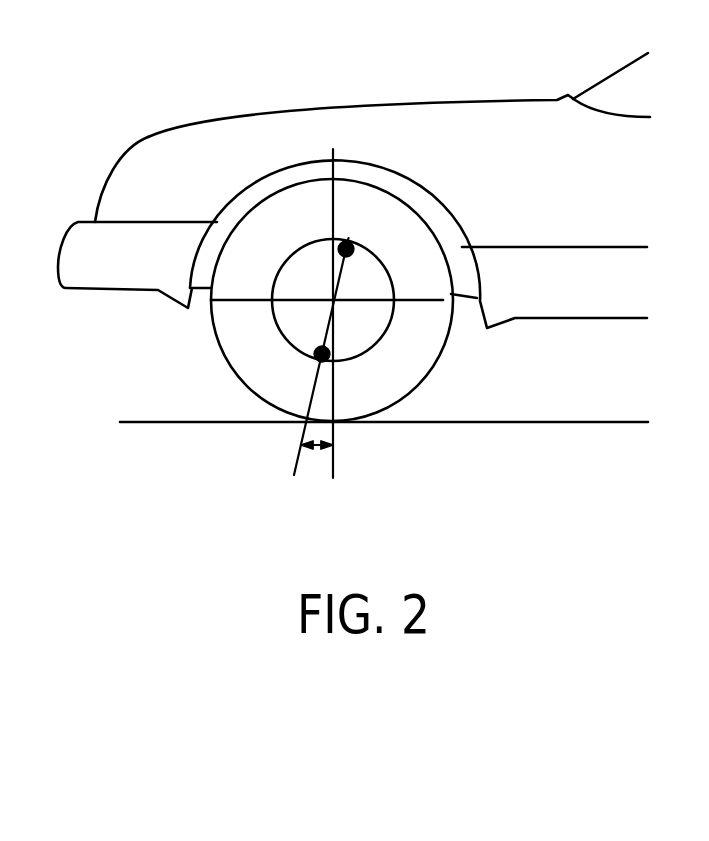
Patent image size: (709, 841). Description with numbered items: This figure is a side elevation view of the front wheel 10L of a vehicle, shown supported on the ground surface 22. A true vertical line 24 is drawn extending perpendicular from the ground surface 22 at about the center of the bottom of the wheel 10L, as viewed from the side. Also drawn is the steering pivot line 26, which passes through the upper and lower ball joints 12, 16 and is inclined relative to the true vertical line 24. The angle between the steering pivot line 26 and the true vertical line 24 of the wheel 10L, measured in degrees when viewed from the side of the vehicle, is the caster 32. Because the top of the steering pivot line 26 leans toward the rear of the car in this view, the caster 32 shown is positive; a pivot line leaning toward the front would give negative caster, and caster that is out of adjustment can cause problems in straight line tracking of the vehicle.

The front wheel 10L is at (238, 363).
The ball joint 12 is at (353, 241).
The ball joint 16 is at (339, 362).
The ground surface 22 is at (618, 422).
The true vertical line 24 is at (333, 461).
The steering pivot line 26 is at (300, 453).
The caster 32 is at (312, 448).